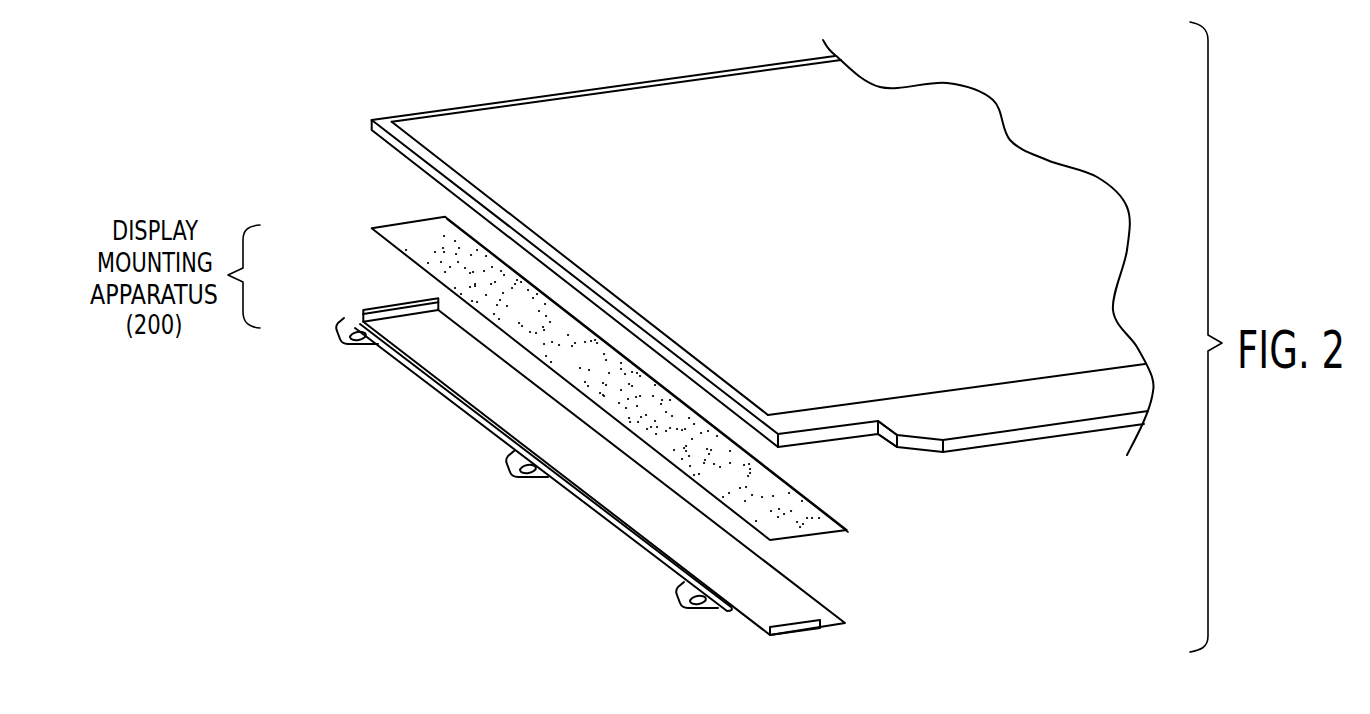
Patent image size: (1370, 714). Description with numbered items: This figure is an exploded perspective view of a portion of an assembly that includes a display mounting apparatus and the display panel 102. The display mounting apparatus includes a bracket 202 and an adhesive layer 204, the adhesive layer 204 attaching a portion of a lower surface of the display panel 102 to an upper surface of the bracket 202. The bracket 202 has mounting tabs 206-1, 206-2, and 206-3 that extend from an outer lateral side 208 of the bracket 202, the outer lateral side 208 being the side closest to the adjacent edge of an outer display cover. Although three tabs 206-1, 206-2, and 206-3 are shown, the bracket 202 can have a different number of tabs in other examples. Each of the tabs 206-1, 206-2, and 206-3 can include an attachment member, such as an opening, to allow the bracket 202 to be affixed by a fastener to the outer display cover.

The display panel 102 is at (1035, 185).
The bracket 202 is at (427, 343).
The adhesive layer 204 is at (413, 235).
The mounting tab 206-1 is at (346, 341).
The mounting tab 206-2 is at (520, 475).
The mounting tab 206-3 is at (687, 610).
The outer lateral side 208 is at (617, 537).